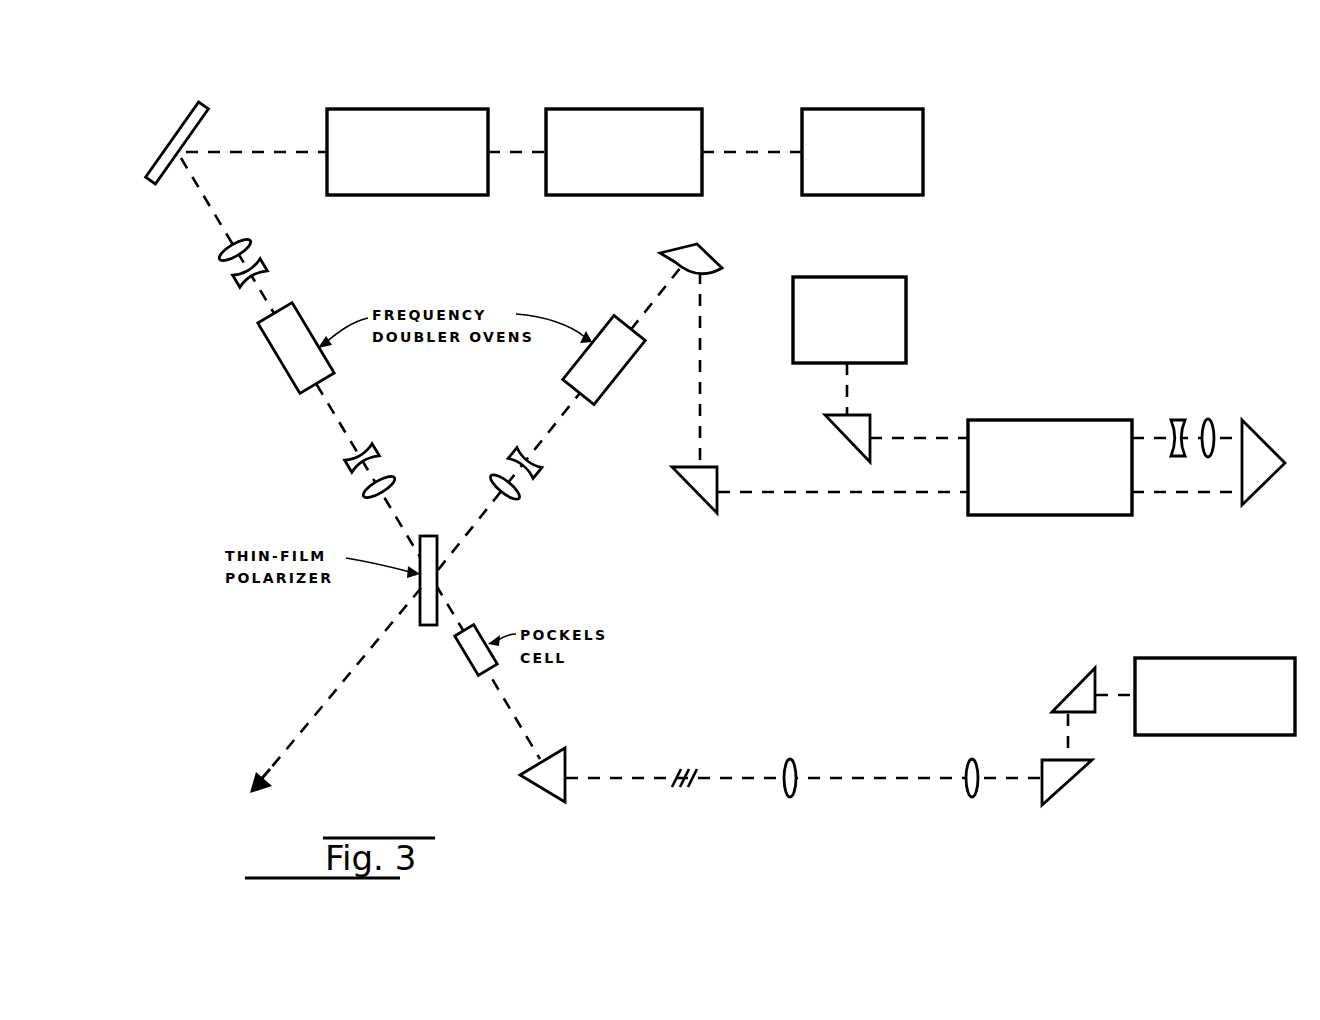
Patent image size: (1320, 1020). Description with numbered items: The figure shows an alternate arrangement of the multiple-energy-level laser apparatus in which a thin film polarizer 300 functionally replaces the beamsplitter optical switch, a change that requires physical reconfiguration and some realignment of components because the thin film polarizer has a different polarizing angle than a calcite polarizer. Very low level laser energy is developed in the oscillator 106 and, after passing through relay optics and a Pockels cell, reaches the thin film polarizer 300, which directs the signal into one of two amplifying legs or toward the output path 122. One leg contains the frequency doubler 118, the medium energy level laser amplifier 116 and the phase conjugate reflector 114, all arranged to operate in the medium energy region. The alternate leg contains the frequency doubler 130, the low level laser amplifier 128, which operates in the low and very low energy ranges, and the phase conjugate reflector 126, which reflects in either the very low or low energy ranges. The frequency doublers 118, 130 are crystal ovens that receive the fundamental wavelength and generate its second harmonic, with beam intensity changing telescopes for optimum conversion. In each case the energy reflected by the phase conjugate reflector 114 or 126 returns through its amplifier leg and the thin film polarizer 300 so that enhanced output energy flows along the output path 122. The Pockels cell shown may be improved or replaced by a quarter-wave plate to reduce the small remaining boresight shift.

The oscillator 106 is at (1217, 658).
The phase conjugate reflector 114 is at (906, 320).
The medium energy level laser amplifier 116 is at (1042, 420).
The frequency doubler 118 is at (612, 388).
The output path 122 is at (297, 735).
The phase conjugate reflector 126 is at (862, 109).
The low level laser amplifier 128 is at (578, 109).
The frequency doubler 130 is at (280, 366).
The thin film polarizer 300 is at (424, 625).